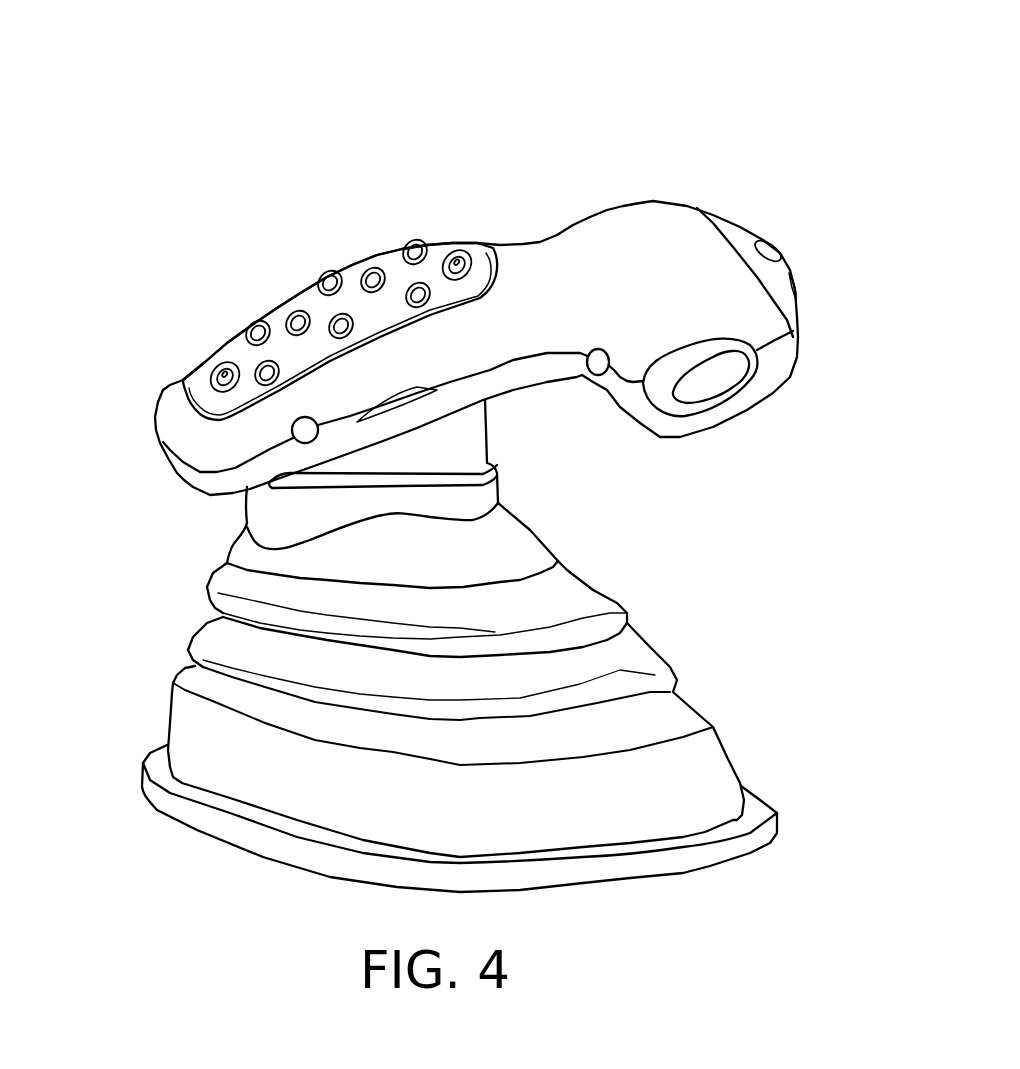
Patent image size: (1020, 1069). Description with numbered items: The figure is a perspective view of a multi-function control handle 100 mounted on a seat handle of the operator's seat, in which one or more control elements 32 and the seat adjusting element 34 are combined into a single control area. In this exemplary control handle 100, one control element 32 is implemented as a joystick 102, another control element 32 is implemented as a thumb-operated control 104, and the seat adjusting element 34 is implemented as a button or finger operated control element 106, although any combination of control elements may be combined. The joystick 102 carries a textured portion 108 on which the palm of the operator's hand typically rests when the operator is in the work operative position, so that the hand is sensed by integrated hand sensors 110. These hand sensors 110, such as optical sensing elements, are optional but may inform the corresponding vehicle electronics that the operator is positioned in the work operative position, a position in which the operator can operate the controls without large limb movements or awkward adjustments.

The multi-function control handle 100 is at (452, 80).
The control element 32 is at (210, 213).
The seat adjusting element 34 is at (738, 442).
The joystick 102 is at (205, 547).
The thumb-operated control 104 is at (810, 242).
The button or finger operated control element 106 is at (735, 408).
The textured portion 108 is at (312, 253).
The integrated hand sensors 110 is at (305, 430).